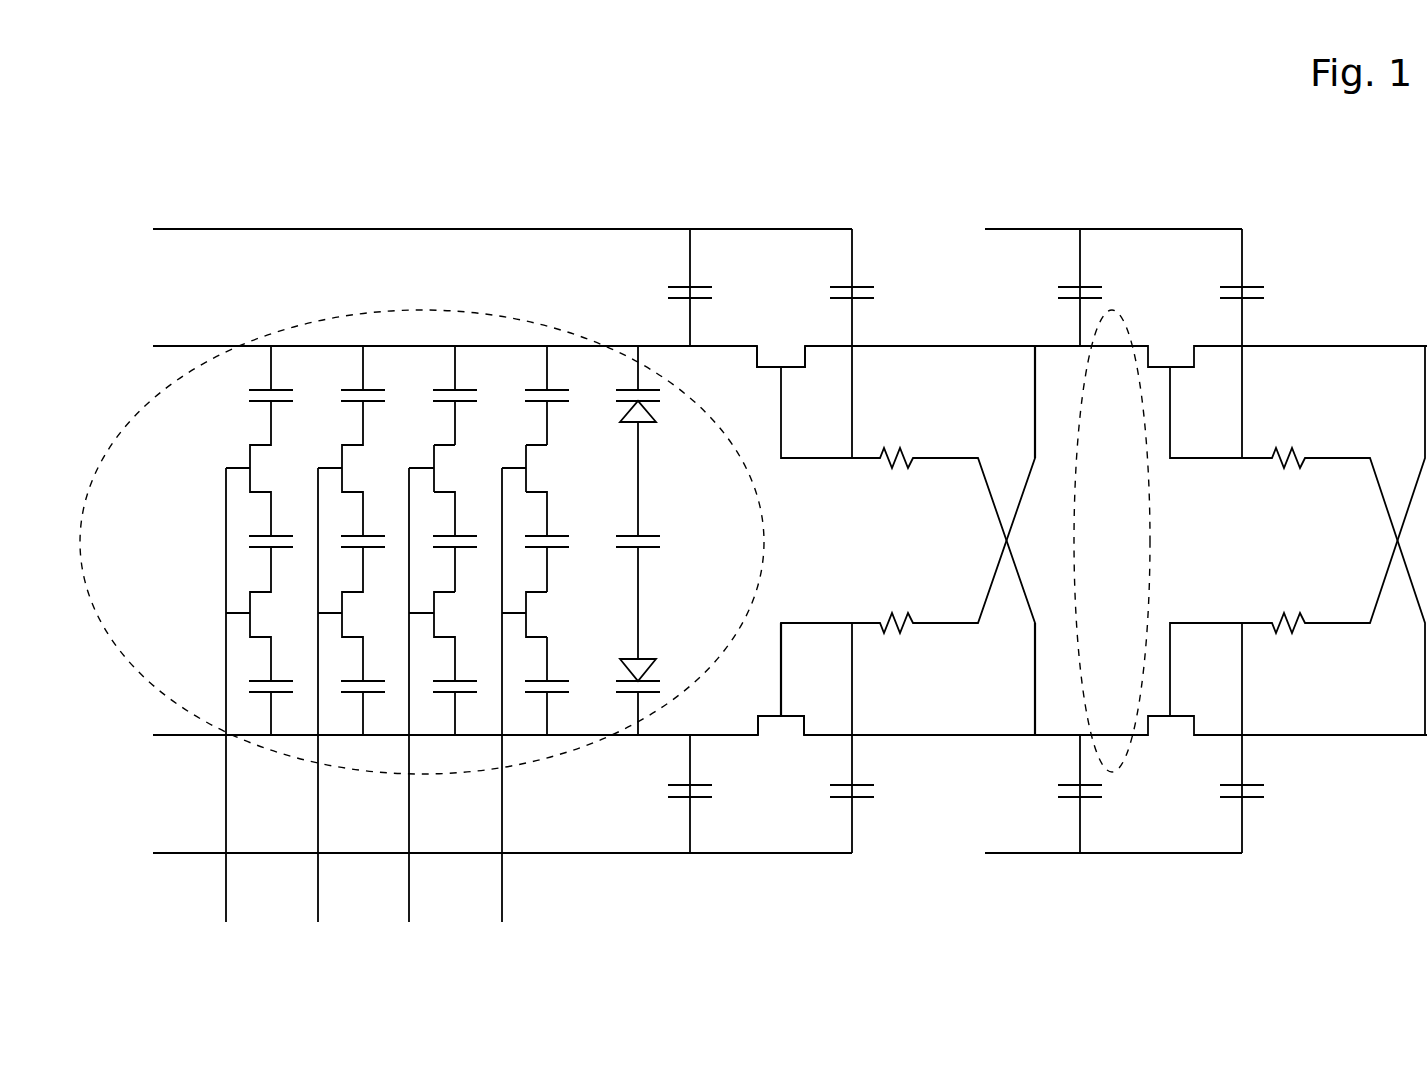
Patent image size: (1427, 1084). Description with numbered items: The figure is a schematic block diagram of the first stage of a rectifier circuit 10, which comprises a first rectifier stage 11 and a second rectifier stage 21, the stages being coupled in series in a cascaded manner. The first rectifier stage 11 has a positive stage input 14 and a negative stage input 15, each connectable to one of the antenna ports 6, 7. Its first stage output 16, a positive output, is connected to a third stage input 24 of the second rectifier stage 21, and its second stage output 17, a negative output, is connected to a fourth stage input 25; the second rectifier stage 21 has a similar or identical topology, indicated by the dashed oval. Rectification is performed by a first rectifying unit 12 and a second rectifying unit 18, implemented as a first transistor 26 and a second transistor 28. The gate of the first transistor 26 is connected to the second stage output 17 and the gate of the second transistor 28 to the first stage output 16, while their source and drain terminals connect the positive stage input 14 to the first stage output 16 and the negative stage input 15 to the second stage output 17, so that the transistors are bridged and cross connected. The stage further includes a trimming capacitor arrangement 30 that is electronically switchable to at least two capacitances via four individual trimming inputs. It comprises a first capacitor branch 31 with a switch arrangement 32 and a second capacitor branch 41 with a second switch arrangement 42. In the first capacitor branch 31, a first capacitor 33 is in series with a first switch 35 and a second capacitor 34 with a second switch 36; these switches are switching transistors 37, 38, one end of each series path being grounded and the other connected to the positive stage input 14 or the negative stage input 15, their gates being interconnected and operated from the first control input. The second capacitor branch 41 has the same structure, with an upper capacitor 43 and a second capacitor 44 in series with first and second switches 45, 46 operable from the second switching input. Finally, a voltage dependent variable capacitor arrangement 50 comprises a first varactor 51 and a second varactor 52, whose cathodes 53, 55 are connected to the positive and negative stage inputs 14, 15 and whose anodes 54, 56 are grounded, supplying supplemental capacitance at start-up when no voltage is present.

The antenna port 6 is at (268, 229).
The antenna port 7 is at (1097, 229).
The rectifier circuit 10 is at (723, 192).
The first rectifier stage 11 is at (483, 285).
The first rectifying unit 12 is at (797, 330).
The positive stage input 14 is at (183, 346).
The negative stage input 15 is at (178, 735).
The first stage output 16 is at (930, 346).
The second stage output 17 is at (897, 737).
The second rectifying unit 18 is at (778, 740).
The second rectifier stage 21 is at (1138, 312).
The third stage input 24 is at (1045, 346).
The fourth stage input 25 is at (1020, 733).
The first transistor 26 is at (790, 368).
The second transistor 28 is at (758, 716).
The trimming capacitor arrangement 30 is at (409, 292).
The first capacitor branch 31 is at (563, 703).
The switch arrangement 32 is at (572, 396).
The first capacitor 33 is at (547, 390).
The second capacitor 34 is at (528, 693).
The first switch 35 is at (553, 420).
The second switch 36 is at (563, 657).
The first switching transistor 37 is at (527, 485).
The second switching transistor 38 is at (527, 607).
The second capacitor branch 41 is at (462, 765).
The second switch arrangement 42 is at (434, 396).
The upper capacitor 43 is at (455, 390).
The second capacitor 44 is at (439, 693).
The first switch 45 is at (435, 480).
The second switch 46 is at (442, 637).
The voltage dependent variable capacitor arrangement 50 is at (710, 477).
The first varactor 51 is at (658, 412).
The second varactor 52 is at (650, 660).
The cathode 53 is at (638, 388).
The anode 54 is at (652, 421).
The cathode 55 is at (650, 695).
The anode 56 is at (638, 642).